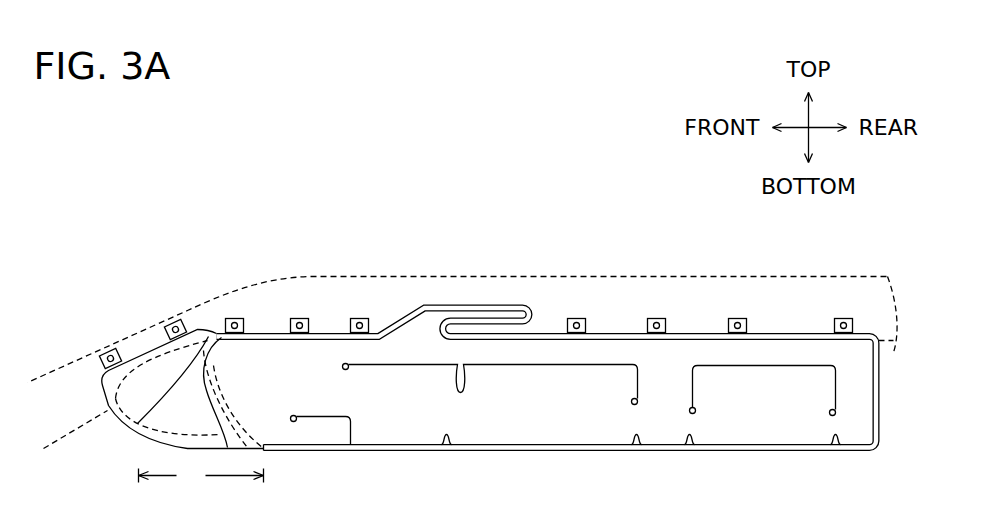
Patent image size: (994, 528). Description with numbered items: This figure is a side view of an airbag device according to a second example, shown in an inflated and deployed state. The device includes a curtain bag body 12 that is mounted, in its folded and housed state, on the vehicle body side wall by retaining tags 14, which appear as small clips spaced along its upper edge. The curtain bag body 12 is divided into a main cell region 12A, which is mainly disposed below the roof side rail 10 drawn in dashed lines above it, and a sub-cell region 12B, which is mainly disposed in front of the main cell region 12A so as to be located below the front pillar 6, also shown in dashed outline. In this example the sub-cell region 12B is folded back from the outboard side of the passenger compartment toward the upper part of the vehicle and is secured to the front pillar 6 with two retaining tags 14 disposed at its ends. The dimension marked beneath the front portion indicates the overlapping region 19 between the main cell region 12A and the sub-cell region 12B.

The front pillar 6 is at (73, 391).
The roof side rail 10 is at (558, 307).
The curtain bag body 12 is at (674, 258).
The main cell region 12A is at (617, 350).
The sub-cell region 12B is at (110, 408).
The retaining tags 14 is at (110, 348).
The overlapping region 19 is at (201, 476).